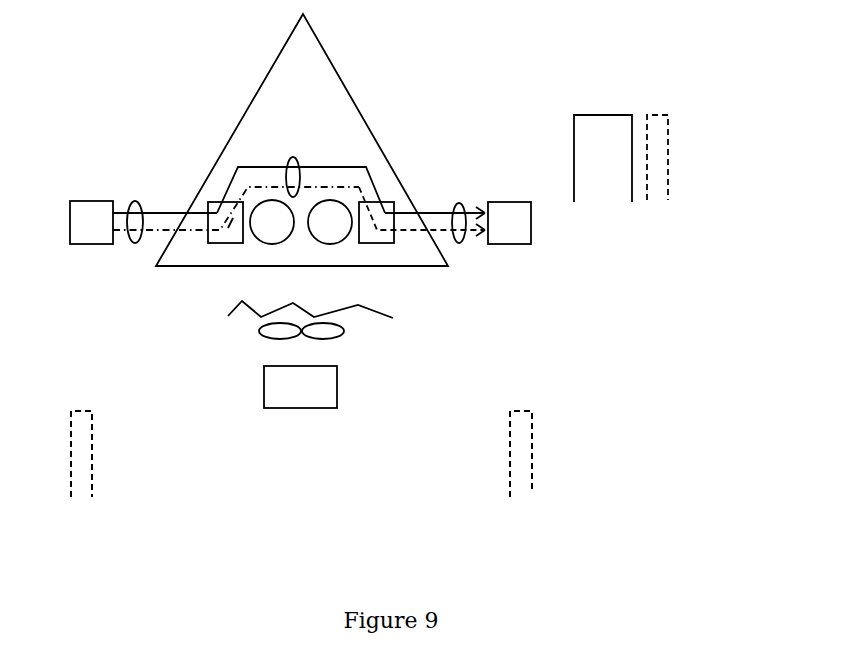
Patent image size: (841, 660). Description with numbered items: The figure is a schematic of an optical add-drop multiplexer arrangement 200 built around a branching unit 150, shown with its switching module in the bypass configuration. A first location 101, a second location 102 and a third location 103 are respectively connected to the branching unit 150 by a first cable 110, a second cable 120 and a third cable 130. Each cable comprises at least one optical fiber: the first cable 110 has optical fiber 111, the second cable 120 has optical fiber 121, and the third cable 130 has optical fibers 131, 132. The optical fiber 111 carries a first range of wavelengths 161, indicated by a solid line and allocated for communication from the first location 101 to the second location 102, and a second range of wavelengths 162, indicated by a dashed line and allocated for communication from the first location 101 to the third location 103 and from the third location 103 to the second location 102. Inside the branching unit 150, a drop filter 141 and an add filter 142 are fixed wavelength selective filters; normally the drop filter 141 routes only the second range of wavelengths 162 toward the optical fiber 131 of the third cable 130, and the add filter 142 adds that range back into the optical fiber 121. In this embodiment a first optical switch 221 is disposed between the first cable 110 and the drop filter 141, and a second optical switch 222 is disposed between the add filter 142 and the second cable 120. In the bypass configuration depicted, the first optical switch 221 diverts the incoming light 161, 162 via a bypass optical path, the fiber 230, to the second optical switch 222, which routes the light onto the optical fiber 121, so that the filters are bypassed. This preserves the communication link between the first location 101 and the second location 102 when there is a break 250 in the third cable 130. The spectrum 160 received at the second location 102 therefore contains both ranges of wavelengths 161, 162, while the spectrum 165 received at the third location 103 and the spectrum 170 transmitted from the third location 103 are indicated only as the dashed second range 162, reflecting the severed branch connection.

The first location 101 is at (85, 245).
The second location 102 is at (532, 228).
The third location 103 is at (323, 410).
The first cable 110 is at (176, 196).
The optical fiber 111 is at (134, 205).
The second cable 120 is at (432, 183).
The optical fiber 121 is at (463, 243).
The third cable 130 is at (264, 386).
The optical fiber 131 is at (264, 333).
The optical fiber 132 is at (340, 330).
The drop filter 141 is at (272, 244).
The add filter 142 is at (330, 244).
The branching unit 150 is at (247, 107).
The spectrum 160 is at (399, 277).
The first range of wavelengths 161 is at (590, 112).
The second range of wavelengths 162 is at (662, 112).
The spectrum 165 is at (93, 513).
The spectrum 170 is at (526, 515).
The OADM branching unit arrangement 200 is at (386, 103).
The first optical switch 221 is at (227, 245).
The second optical switch 222 is at (375, 245).
The bypass optical path fiber 230 is at (297, 160).
The break 250 is at (393, 318).